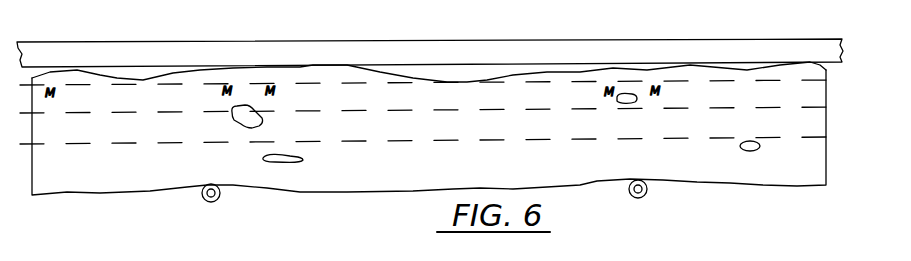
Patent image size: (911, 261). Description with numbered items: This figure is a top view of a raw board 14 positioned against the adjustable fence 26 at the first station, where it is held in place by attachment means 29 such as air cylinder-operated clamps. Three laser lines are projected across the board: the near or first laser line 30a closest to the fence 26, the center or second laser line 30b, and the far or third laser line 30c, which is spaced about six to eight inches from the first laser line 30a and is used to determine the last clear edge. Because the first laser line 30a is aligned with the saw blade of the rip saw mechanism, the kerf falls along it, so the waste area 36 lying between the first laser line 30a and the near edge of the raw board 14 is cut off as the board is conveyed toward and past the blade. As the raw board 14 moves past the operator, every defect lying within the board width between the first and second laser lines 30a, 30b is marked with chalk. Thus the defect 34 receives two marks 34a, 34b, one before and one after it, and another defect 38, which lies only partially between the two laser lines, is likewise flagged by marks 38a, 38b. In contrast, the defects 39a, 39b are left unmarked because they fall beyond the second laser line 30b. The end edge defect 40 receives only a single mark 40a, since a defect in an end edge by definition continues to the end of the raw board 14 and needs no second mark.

The raw board 14 is at (262, 192).
The adjustable fence 26 is at (767, 36).
The attachment means 29 is at (203, 200).
The first laser line 30a is at (836, 80).
The second laser line 30b is at (836, 106).
The third laser line 30c is at (826, 135).
The defect 34 is at (634, 103).
The mark 34a is at (600, 92).
The mark 34b is at (662, 92).
The waste area 36 is at (688, 66).
The defect 38 is at (233, 119).
The mark 38a is at (222, 94).
The mark 38b is at (279, 93).
The defect 39a is at (300, 162).
The defect 39b is at (755, 150).
The end edge defect 40 is at (40, 100).
The mark 40a is at (62, 93).